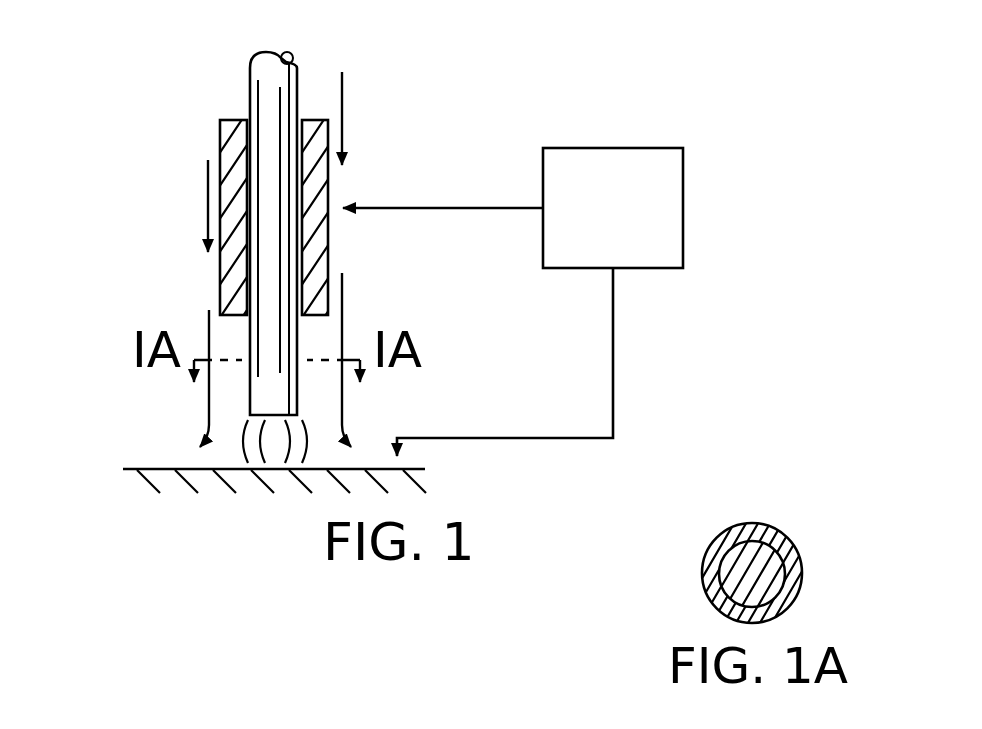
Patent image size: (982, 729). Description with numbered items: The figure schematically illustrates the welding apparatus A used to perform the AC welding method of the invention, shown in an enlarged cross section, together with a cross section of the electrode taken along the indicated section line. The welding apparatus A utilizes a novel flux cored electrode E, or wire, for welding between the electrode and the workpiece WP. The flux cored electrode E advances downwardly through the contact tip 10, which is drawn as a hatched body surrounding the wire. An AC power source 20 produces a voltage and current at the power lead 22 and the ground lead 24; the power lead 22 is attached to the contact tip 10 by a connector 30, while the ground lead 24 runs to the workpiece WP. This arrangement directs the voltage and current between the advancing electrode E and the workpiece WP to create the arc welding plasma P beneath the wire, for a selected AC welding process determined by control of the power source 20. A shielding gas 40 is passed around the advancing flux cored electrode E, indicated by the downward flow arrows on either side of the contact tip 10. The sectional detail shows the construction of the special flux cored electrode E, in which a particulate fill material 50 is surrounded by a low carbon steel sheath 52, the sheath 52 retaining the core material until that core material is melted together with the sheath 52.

In FIG. 1, the contact tip 10 is at (330, 190).
In FIG. 1, the AC power source 20 is at (683, 180).
In FIG. 1, the power lead 22 is at (448, 207).
In FIG. 1, the ground lead 24 is at (528, 438).
In FIG. 1, the connector 30 is at (332, 213).
In FIG. 1, the shielding gas 40 is at (208, 203).
In FIG. 1A, the particulate fill material 50 is at (730, 577).
In FIG. 1A, the low carbon steel sheath 52 is at (795, 587).
In FIG. 1, the flux cored electrode E is at (248, 72).
In FIG. 1A, the flux cored electrode E is at (804, 532).
In FIG. 1, the workpiece WP is at (147, 468).
In FIG. 1, the arc welding plasma P is at (262, 415).
In FIG. 1, the welding apparatus A is at (460, 60).